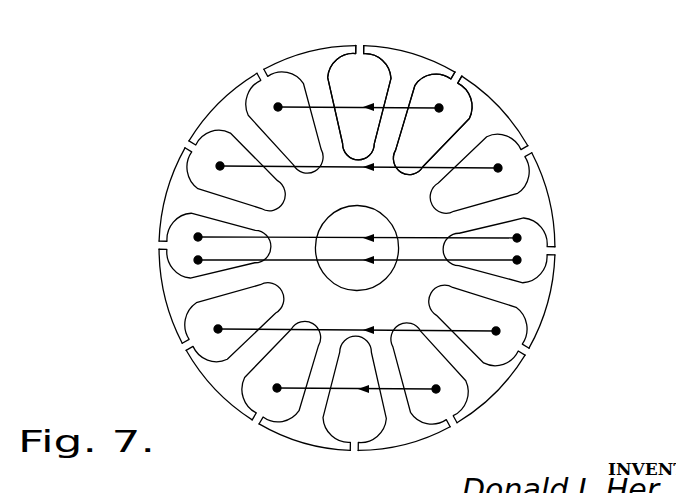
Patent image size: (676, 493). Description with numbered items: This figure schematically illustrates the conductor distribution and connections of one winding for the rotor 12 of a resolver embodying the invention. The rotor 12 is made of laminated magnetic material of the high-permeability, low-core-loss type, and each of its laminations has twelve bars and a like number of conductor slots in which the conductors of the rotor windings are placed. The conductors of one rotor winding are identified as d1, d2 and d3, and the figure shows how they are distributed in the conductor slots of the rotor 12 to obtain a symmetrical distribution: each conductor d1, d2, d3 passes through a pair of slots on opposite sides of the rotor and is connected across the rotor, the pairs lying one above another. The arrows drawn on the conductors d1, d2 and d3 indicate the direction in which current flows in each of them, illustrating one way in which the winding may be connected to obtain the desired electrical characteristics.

The rotor 12 is at (200, 111).
The conductor d1 is at (278, 107).
The conductor d2 is at (220, 166).
The conductor d3 is at (198, 237).